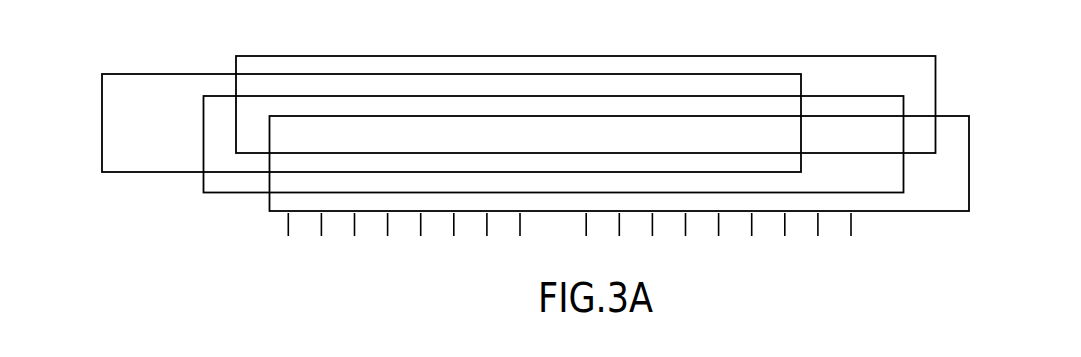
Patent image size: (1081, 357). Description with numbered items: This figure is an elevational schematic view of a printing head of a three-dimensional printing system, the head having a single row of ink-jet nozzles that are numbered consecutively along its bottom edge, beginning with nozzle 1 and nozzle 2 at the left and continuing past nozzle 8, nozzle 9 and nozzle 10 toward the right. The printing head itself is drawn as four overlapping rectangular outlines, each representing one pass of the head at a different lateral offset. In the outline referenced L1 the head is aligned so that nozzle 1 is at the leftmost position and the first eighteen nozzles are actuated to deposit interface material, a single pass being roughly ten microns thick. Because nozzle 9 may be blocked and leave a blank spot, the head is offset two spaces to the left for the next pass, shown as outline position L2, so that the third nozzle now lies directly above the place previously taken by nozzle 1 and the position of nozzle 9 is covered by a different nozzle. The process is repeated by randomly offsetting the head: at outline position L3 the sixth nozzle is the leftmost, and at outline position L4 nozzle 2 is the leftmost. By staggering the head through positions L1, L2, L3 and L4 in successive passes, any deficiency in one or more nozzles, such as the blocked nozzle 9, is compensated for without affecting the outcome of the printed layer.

The outline position L1 is at (969, 187).
The outline position L2 is at (887, 193).
The outline position L3 is at (139, 74).
The outline position L4 is at (425, 56).
The nozzle 1 is at (287, 250).
The nozzle 2 is at (320, 250).
The nozzle 8 is at (519, 250).
The nozzle 9 is at (552, 229).
The nozzle 10 is at (587, 250).